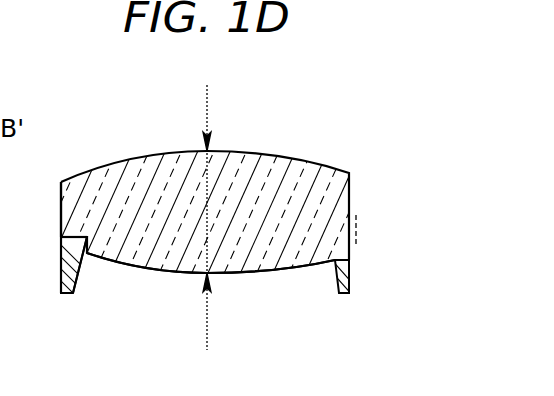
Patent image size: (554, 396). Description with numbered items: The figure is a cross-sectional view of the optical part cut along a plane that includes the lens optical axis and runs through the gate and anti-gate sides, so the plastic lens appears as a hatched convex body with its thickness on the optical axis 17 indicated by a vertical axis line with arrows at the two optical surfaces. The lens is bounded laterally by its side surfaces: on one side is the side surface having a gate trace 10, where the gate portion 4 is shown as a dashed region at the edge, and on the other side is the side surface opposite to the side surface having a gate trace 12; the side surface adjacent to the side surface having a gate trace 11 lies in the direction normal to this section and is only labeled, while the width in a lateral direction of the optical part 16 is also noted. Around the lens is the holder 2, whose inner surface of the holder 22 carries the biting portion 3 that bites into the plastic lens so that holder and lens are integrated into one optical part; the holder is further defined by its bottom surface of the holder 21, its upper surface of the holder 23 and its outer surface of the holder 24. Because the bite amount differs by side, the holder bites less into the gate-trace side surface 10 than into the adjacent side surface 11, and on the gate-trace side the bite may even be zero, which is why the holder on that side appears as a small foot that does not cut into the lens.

The holder 2 is at (352, 283).
The biting portion 3 is at (95, 250).
The gate portion 4 is at (356, 226).
The side surface having a gate trace 10 is at (350, 258).
The side surface adjacent to the side surface having a gate trace 11 is at (16, 24).
The side surface opposite to the side surface having a gate trace 12 is at (61, 212).
The width in a lateral direction of the optical part 16 is at (18, 69).
The thickness on an optical axis of the plastic lens 17 is at (207, 112).
The bottom surface of the holder 21 is at (73, 233).
The inner surface of the holder 22 is at (80, 268).
The upper surface of the holder 23 is at (65, 296).
The outer surface of the holder 24 is at (61, 262).